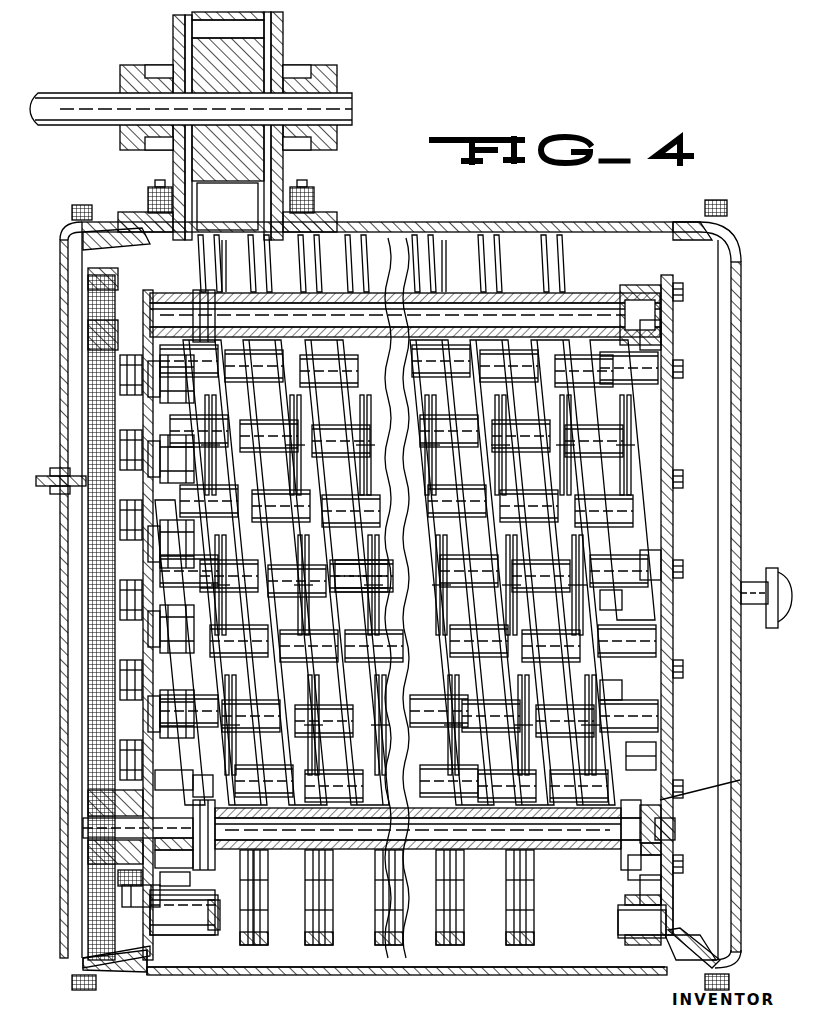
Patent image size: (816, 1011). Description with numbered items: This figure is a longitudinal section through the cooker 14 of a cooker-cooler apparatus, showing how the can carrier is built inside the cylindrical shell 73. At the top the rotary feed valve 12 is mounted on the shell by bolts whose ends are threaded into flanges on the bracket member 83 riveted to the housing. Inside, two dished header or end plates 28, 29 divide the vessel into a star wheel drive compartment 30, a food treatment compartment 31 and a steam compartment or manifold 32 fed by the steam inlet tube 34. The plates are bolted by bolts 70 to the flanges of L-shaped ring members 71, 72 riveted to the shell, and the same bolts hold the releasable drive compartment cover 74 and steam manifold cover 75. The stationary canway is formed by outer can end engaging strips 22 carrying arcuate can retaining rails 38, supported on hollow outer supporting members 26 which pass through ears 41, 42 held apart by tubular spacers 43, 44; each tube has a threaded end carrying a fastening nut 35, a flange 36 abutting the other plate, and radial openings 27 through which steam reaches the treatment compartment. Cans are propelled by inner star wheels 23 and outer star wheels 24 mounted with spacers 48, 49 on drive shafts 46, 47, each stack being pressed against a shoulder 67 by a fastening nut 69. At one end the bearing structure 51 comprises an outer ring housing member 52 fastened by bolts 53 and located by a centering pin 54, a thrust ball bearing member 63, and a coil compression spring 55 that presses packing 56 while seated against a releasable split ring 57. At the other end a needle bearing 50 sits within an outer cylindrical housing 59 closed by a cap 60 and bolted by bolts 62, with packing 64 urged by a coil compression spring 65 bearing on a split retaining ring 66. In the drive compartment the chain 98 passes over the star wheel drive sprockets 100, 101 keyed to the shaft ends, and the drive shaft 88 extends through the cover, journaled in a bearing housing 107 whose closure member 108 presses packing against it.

The rotary feed valve 12 is at (283, 48).
The cooker 14 is at (560, 222).
The outer can end engaging strips 22 is at (494, 246).
The inner star wheels 23 is at (258, 410).
The outer star wheels 24 is at (286, 912).
The outer canway supporting members 26 is at (640, 570).
The radial openings 27 is at (674, 890).
The header or end plate 28 is at (148, 968).
The header or end plate 29 is at (676, 540).
The star wheel drive compartment 30 is at (82, 915).
The food treatment compartment 31 is at (292, 950).
The steam compartment or manifold 32 is at (680, 935).
The steam inlet tube or intake 34 is at (760, 568).
The fastening nut 35 is at (125, 690).
The flange 36 is at (662, 568).
The arcuate can retaining strip or rail 38 is at (342, 240).
The ears 41 is at (355, 580).
The ears 42 is at (375, 932).
The tubular spacers 43 is at (280, 660).
The tubular spacers 44 is at (192, 920).
The inner star wheel drive shaft 46 is at (558, 850).
The outer star wheel drive shaft 47 is at (596, 303).
The spacers 48 is at (334, 408).
The spacers 49 is at (316, 293).
The needle bearing 50 is at (88, 808).
The bearing structure 51 is at (652, 808).
The outer ring housing member 52 is at (662, 846).
The bolts 53 is at (644, 867).
The centering pin 54 is at (676, 830).
The coil compression spring 55 is at (621, 802).
The packing 56 is at (641, 756).
The releasable split ring 57 is at (621, 850).
The outer cylindrical housing 59 is at (180, 878).
The cap 60 is at (83, 836).
The bolts 62 is at (127, 889).
The thrust ball bearing member 63 is at (740, 780).
The packing 64 is at (178, 790).
The coil compression spring 65 is at (205, 775).
The split retaining ring 66 is at (193, 850).
The shoulder 67 is at (611, 830).
The fastening nut 69 is at (210, 812).
The bolts 70 is at (72, 212).
The L-shaped ring member 71 is at (100, 232).
The L-shaped ring member 72 is at (700, 222).
The cylindrical shell 73 is at (512, 222).
The drive compartment cover 74 is at (62, 935).
The steam manifold cover 75 is at (738, 752).
The bracket member 83 is at (314, 205).
The drive shaft 88 is at (40, 488).
The chain 98 is at (88, 398).
The star wheel drive sprocket 100 is at (88, 852).
The star wheel drive sprocket 101 is at (88, 338).
The bearing housing 107 is at (70, 470).
The closure member 108 is at (60, 486).